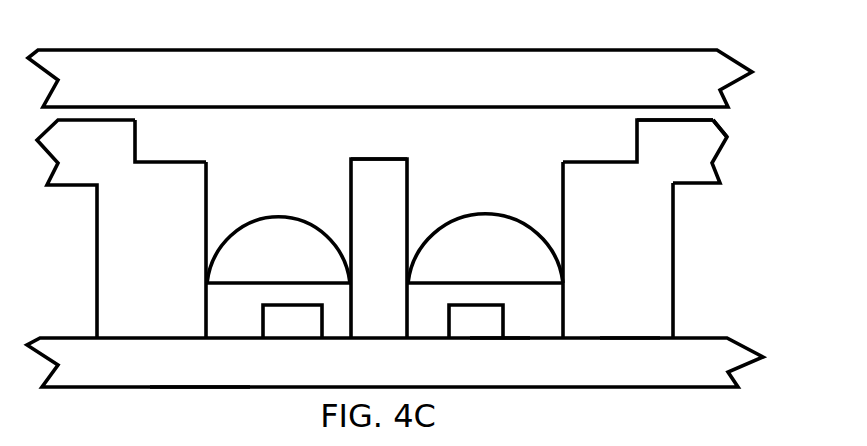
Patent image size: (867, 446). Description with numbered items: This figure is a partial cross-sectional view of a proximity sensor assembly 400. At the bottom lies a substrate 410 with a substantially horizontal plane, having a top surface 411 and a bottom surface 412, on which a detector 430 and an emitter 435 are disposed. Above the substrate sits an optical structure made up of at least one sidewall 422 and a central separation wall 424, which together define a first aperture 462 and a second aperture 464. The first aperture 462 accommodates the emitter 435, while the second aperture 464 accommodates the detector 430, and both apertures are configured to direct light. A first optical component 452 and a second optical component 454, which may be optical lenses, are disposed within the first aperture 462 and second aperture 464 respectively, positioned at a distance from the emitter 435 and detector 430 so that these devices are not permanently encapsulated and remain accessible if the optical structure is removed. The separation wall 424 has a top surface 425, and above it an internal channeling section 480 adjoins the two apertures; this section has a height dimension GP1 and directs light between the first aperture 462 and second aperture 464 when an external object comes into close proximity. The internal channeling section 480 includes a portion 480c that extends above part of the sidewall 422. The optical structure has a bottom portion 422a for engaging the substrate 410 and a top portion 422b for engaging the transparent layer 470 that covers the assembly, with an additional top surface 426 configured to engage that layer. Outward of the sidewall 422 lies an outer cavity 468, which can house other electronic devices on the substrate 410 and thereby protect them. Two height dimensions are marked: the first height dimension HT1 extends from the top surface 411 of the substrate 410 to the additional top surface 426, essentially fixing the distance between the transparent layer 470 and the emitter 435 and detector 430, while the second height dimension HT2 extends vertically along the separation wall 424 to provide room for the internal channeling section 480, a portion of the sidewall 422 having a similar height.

The proximity sensor assembly 400 is at (99, 26).
The substrate 410 is at (411, 369).
The top surface 411 is at (501, 344).
The bottom surface 412 is at (194, 373).
The sidewall 422 is at (598, 284).
The bottom portion 422a is at (627, 317).
The top portion 422b is at (700, 128).
The separation wall 424 is at (361, 261).
The top surface 425 is at (397, 150).
The additional top surface 426 is at (667, 116).
The detector 430 is at (275, 332).
The emitter 435 is at (459, 332).
The first optical component 452 is at (266, 261).
The second optical component 454 is at (453, 261).
The first aperture 462 is at (243, 204).
The second aperture 464 is at (475, 192).
The outer cavity 468 is at (35, 247).
The transparent layer 470 is at (410, 92).
The internal channeling section 480 is at (360, 129).
The portion of internal channeling section 480c is at (165, 148).
The first height dimension HT1 is at (117, 121).
The second height dimension HT2 is at (174, 337).
The height dimension GP1 is at (318, 78).